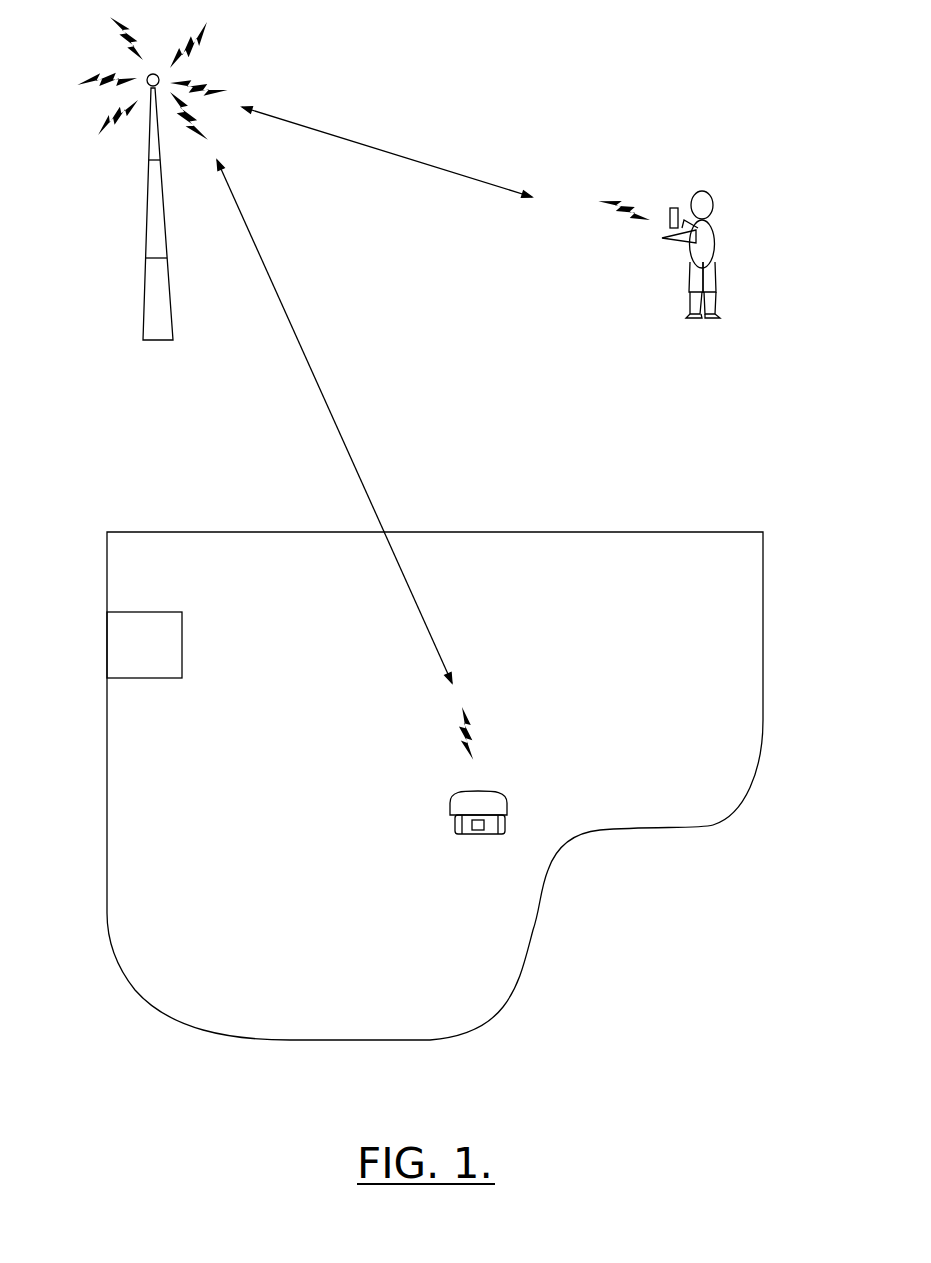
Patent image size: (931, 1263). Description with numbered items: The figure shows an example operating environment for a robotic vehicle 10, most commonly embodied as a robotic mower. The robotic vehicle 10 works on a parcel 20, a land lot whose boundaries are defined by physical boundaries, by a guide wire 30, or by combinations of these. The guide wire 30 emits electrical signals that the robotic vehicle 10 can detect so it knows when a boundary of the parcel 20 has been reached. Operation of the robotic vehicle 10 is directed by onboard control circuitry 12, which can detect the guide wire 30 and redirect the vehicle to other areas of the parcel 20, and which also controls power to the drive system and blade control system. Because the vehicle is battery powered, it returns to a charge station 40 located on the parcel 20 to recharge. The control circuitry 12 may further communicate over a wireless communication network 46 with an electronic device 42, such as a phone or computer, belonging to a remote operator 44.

The robotic vehicle 10 is at (433, 818).
The control circuitry 12 is at (475, 826).
The parcel 20 is at (317, 858).
The guide wire 30 is at (537, 953).
The charge station 40 is at (133, 640).
The electronic device 42 is at (675, 200).
The remote operator 44 is at (740, 195).
The wireless communication network 46 is at (283, 290).